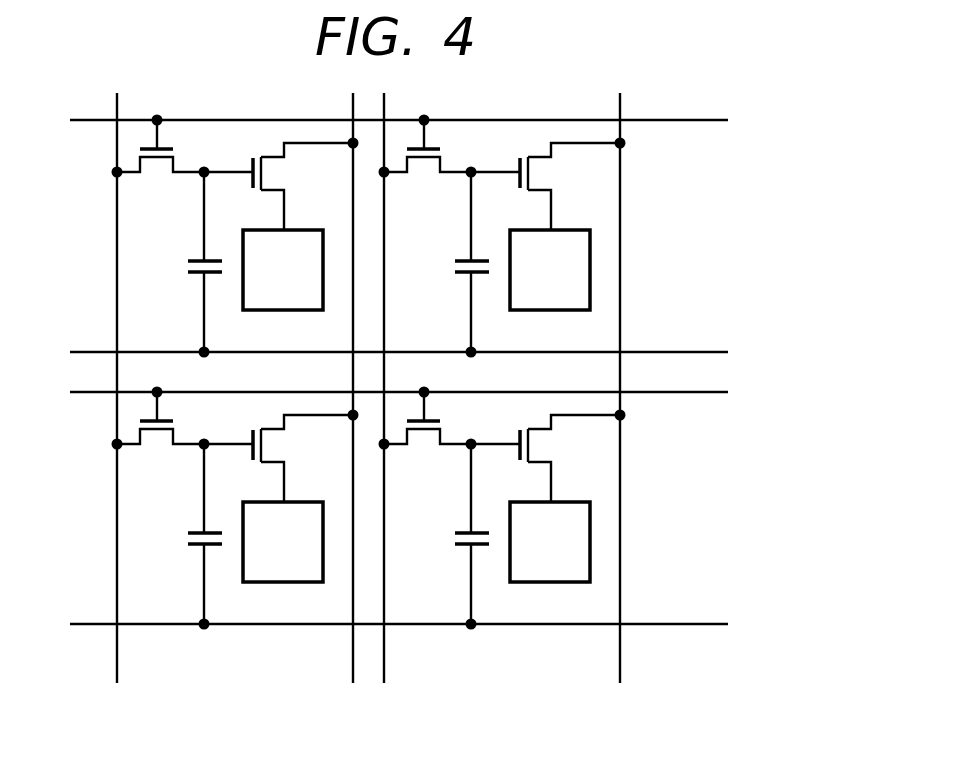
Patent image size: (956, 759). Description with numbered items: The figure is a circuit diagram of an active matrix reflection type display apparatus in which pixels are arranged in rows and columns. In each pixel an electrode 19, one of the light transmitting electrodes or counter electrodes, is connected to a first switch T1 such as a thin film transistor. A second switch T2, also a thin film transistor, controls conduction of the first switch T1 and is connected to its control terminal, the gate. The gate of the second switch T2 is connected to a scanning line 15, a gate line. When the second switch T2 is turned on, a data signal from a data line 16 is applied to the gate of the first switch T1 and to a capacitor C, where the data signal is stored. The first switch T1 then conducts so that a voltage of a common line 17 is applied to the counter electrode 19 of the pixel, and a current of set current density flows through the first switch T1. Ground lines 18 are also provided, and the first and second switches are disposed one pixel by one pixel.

The scanning line 15 is at (690, 121).
The data line 16 is at (117, 661).
The common line 17 is at (353, 661).
The ground line 18 is at (688, 352).
The electrode 19 is at (281, 311).
The first switch T1 is at (273, 171).
The second switch T2 is at (157, 177).
The capacitor C is at (188, 265).